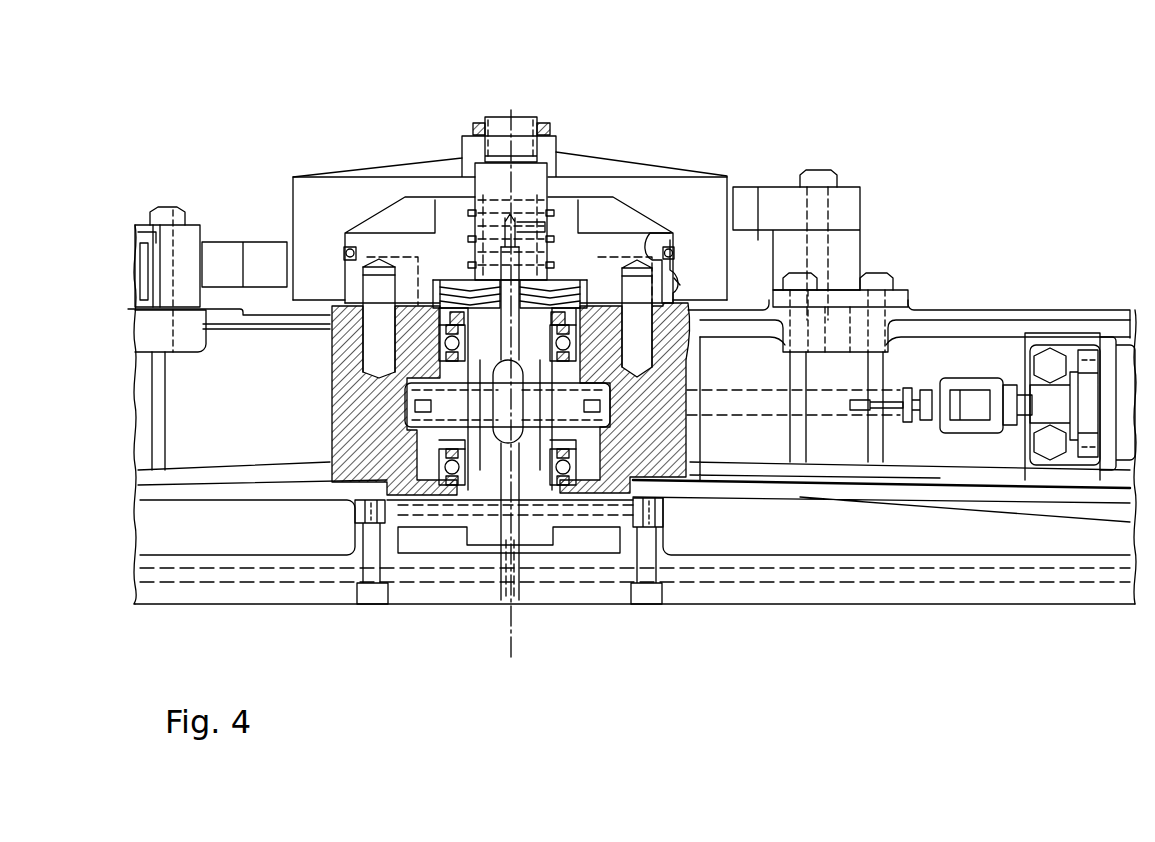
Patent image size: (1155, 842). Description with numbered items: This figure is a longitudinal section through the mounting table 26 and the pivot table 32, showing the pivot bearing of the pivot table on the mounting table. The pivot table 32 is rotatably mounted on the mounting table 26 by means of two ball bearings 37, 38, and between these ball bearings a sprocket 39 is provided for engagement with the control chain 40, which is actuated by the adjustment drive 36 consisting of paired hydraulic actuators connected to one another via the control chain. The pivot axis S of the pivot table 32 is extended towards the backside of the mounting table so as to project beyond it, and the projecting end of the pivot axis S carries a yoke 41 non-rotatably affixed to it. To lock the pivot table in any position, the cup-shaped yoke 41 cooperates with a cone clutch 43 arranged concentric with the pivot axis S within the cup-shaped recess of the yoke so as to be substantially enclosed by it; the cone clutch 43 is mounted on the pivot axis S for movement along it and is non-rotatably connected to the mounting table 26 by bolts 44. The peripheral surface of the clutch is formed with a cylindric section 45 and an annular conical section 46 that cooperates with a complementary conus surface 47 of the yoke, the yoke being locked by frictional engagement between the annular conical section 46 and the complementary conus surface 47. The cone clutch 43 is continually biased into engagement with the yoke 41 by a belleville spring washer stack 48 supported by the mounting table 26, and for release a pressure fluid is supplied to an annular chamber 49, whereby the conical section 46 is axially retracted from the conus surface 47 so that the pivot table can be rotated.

The mounting table 26 is at (977, 330).
The pivot table 32 is at (952, 527).
The adjustment drive 36 is at (1125, 400).
The ball bearing 37 is at (437, 343).
The ball bearing 38 is at (437, 467).
The sprocket 39 is at (427, 409).
The control chain 40 is at (882, 398).
The yoke 41 is at (601, 187).
The cone clutch 43 is at (461, 263).
The bolts 44 is at (391, 328).
The cylindric section 45 is at (652, 232).
The annular conical section 46 is at (685, 335).
The complementary conus surface 47 is at (680, 287).
The belleville spring washer stack 48 is at (565, 292).
The annular chamber 49 is at (607, 300).
The pivot axis S is at (511, 655).